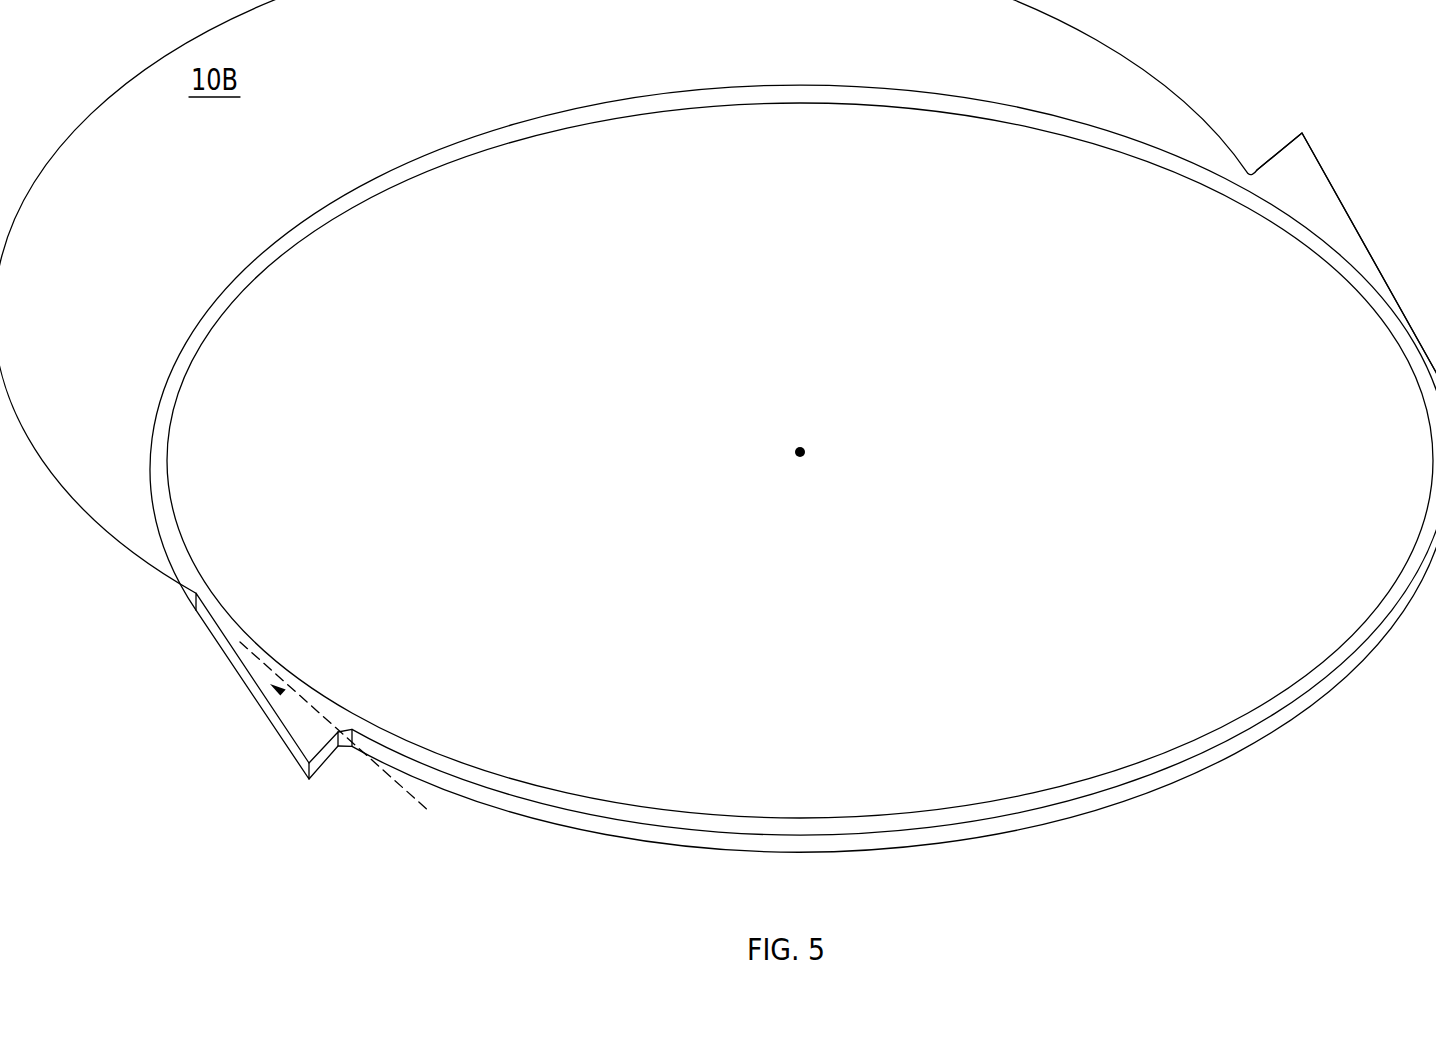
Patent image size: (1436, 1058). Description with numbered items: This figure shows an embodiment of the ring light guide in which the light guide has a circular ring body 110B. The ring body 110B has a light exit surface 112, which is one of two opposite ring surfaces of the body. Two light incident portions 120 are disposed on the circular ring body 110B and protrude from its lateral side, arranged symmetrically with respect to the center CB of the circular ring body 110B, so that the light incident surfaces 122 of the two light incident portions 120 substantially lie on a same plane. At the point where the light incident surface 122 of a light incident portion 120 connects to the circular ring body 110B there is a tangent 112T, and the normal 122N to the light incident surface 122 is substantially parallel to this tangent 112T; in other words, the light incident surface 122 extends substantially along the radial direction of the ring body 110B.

The circular ring body 110B is at (1025, 81).
The light exit surface 112 is at (178, 540).
The tangent 112T is at (354, 746).
The light incident portion 120 is at (1315, 187).
The light incident surface 122 is at (322, 757).
The normal 122N is at (303, 715).
The center CB is at (823, 452).